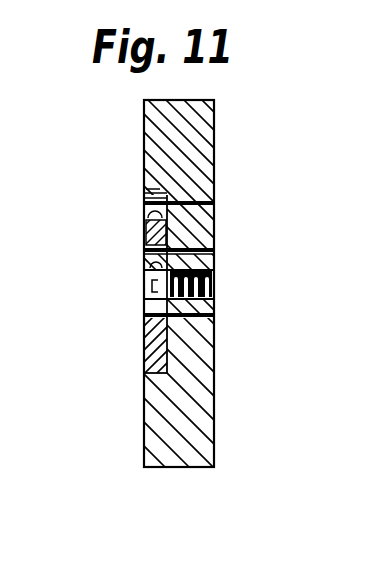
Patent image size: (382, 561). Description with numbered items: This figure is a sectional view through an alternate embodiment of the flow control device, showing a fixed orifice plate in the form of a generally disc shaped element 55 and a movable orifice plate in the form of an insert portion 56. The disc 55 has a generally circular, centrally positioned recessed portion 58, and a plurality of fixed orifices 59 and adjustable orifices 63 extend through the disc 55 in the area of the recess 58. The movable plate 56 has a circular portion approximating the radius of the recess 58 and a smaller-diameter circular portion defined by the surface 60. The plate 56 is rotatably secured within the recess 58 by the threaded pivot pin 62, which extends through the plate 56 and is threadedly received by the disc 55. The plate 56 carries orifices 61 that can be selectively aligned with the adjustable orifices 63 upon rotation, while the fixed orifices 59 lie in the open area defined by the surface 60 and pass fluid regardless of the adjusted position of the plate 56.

The disc shaped element 55 is at (205, 115).
The insert portion 56 is at (143, 356).
The recessed portion 58 is at (146, 198).
The fixed orifices 59 is at (213, 203).
The surface 60 is at (146, 209).
The orifices 61 is at (144, 253).
The threaded pivot pin 62 is at (141, 288).
The adjustable orifices 63 is at (213, 252).